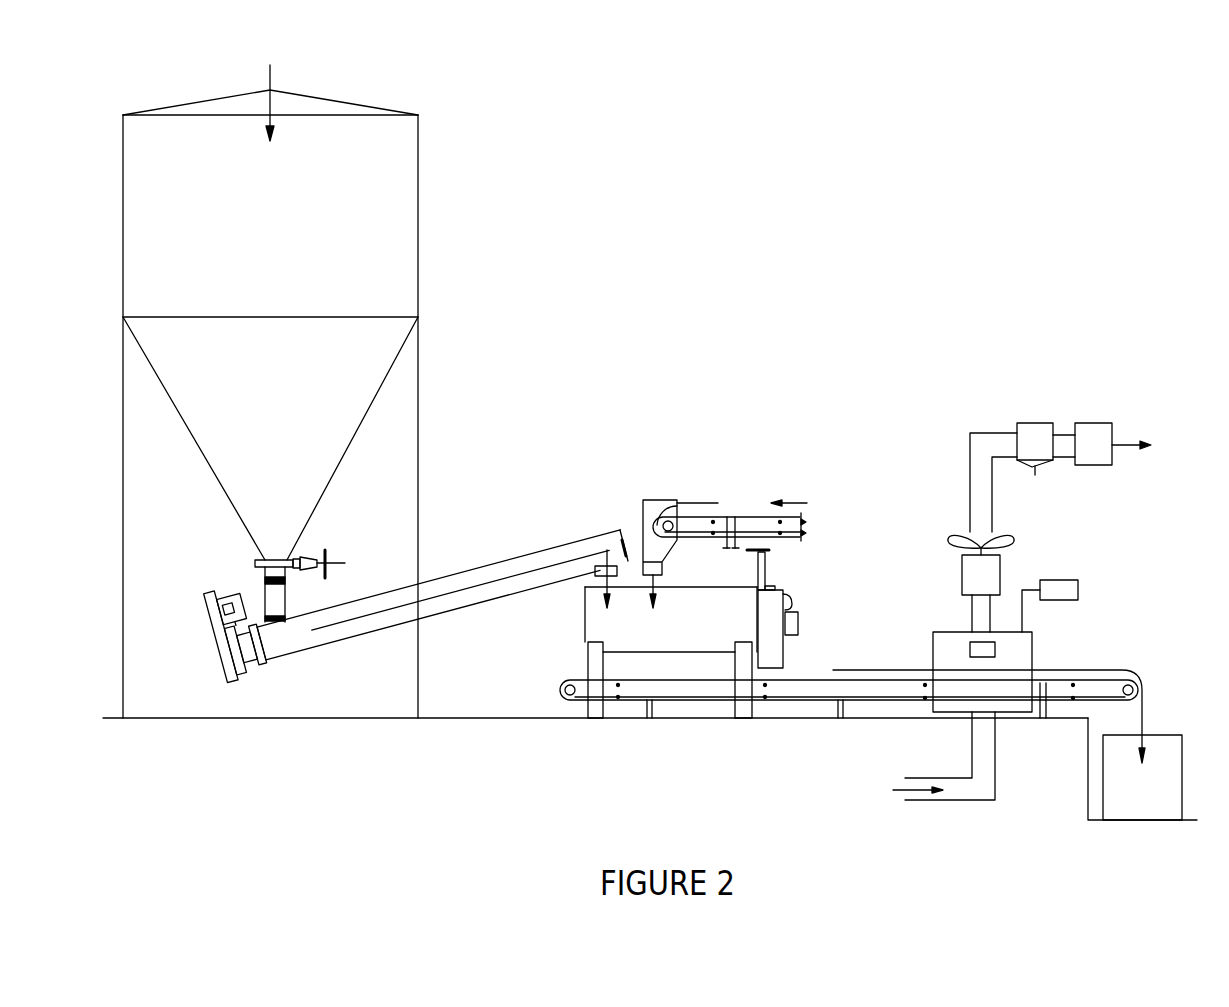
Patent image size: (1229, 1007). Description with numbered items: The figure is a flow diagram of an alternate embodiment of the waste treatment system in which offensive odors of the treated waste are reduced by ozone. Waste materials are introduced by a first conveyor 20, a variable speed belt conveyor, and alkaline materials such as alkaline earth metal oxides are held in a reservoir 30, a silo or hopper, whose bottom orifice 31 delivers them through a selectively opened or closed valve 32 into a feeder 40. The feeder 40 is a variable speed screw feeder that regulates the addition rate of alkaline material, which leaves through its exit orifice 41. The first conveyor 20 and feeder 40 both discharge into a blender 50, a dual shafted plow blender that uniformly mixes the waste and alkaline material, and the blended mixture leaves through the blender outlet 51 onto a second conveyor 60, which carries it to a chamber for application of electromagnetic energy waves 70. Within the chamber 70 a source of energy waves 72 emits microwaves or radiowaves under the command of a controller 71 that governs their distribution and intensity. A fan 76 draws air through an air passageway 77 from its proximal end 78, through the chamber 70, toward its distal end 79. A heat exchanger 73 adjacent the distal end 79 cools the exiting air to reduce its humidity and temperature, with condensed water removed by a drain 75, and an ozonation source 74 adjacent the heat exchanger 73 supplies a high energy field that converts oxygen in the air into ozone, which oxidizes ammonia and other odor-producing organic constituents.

The first conveyor 20 is at (750, 512).
The reservoir 30 is at (418, 231).
The bottom orifice 31 is at (262, 573).
The valve 32 is at (345, 563).
The feeder 40 is at (515, 558).
The exit orifice 41 is at (585, 572).
The blender 50 is at (587, 623).
The blender outlet 51 is at (793, 653).
The second conveyor 60 is at (558, 688).
The chamber for application of electromagnetic energy waves 70 is at (1032, 643).
The controller 71 is at (1078, 590).
The source of energy waves 72 is at (970, 645).
The heat exchanger 73 is at (1043, 423).
The ozonation source 74 is at (1112, 423).
The drain 75 is at (1040, 467).
The fan 76 is at (981, 584).
The air passageway 77 is at (995, 763).
The proximal end 78 is at (958, 790).
The distal end 79 is at (1002, 445).